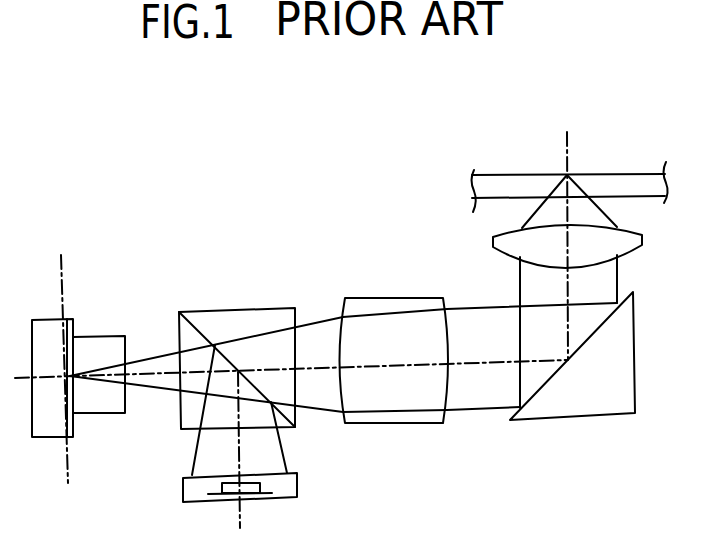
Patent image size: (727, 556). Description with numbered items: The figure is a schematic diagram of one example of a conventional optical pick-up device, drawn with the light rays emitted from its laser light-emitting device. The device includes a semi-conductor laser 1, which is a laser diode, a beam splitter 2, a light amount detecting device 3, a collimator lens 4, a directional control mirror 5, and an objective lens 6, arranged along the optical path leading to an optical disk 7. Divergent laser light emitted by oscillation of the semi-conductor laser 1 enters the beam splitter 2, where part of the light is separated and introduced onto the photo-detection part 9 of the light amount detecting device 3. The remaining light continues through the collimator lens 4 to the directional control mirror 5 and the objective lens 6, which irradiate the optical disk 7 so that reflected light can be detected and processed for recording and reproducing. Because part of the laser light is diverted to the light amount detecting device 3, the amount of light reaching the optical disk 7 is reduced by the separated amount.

The semi-conductor laser 1 is at (47, 327).
The beam splitter 2 is at (245, 308).
The light amount detecting device 3 is at (290, 480).
The collimator lens 4 is at (390, 325).
The directional control mirror 5 is at (610, 400).
The objective lens 6 is at (600, 245).
The optical disk 7 is at (607, 183).
The photo-detection part 9 is at (238, 480).